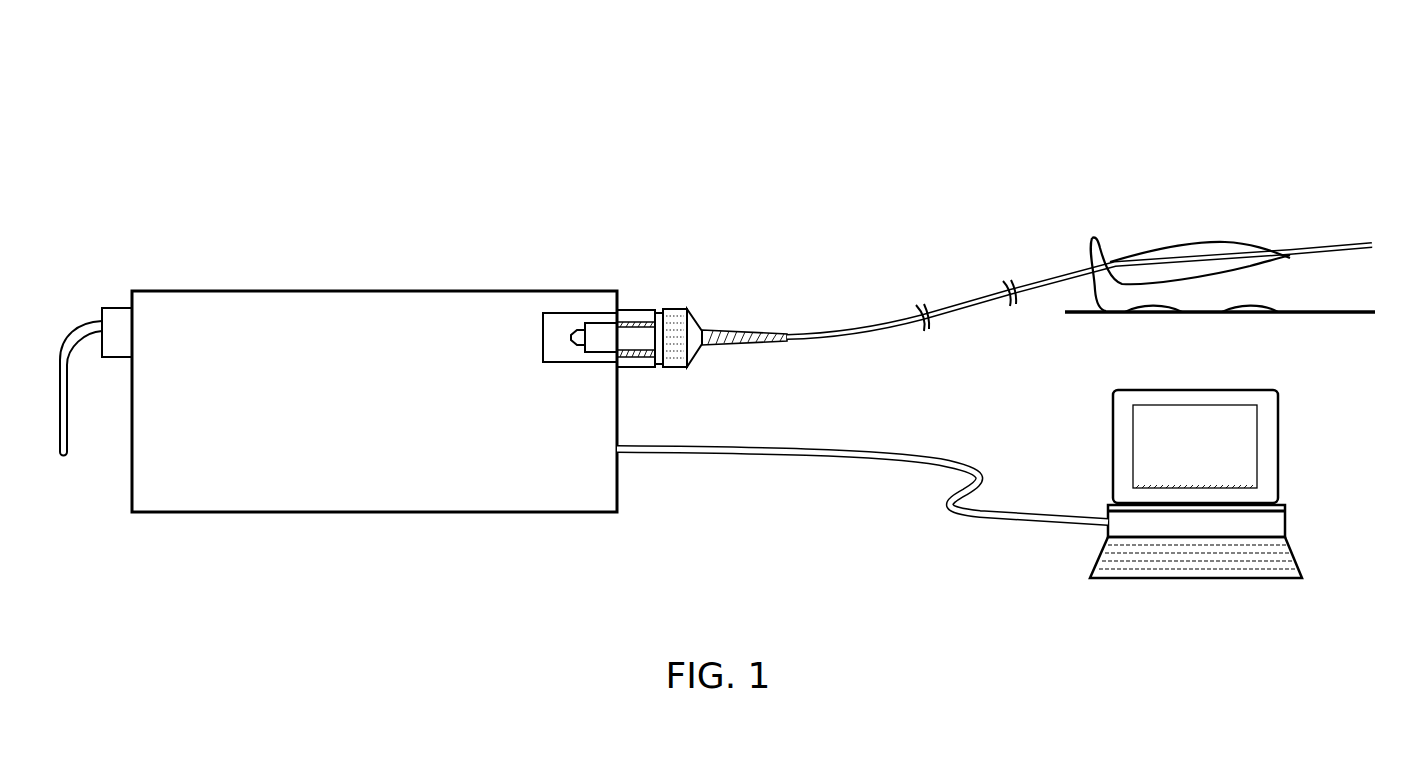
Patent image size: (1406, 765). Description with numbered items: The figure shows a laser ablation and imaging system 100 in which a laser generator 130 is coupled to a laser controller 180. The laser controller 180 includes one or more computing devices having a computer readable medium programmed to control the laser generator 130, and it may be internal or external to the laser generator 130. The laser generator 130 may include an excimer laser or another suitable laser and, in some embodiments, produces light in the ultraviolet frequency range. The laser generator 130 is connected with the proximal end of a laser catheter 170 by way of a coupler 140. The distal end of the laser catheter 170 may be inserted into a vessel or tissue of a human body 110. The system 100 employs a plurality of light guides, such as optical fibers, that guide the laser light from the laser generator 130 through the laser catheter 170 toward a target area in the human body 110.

The laser ablation and imaging system 100 is at (762, 69).
The human body 110 is at (1343, 278).
The laser generator 130 is at (431, 405).
The coupler 140 is at (682, 290).
The laser catheter 170 is at (858, 332).
The laser controller 180 is at (1209, 452).